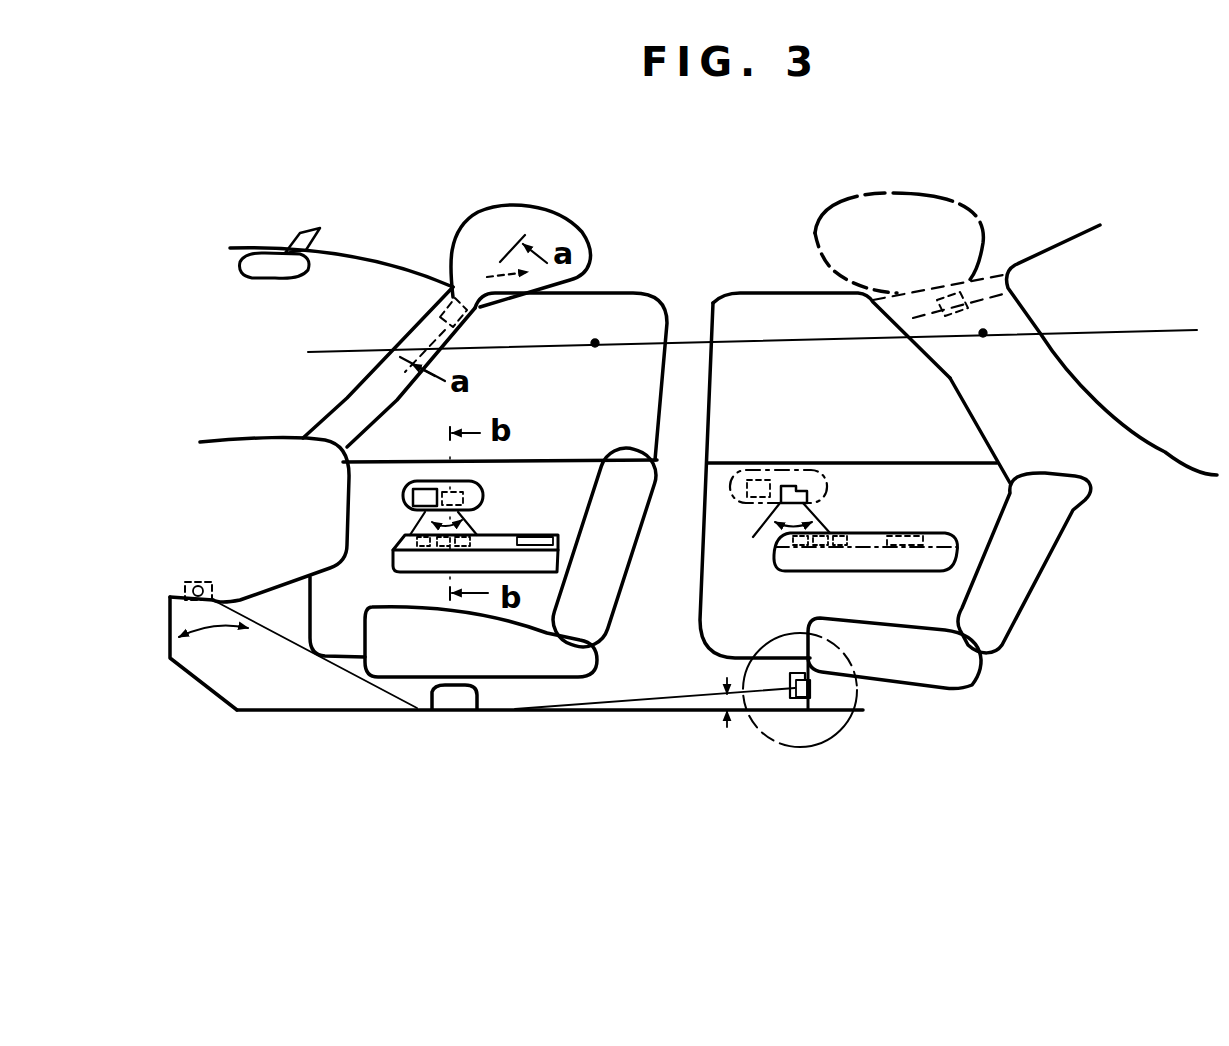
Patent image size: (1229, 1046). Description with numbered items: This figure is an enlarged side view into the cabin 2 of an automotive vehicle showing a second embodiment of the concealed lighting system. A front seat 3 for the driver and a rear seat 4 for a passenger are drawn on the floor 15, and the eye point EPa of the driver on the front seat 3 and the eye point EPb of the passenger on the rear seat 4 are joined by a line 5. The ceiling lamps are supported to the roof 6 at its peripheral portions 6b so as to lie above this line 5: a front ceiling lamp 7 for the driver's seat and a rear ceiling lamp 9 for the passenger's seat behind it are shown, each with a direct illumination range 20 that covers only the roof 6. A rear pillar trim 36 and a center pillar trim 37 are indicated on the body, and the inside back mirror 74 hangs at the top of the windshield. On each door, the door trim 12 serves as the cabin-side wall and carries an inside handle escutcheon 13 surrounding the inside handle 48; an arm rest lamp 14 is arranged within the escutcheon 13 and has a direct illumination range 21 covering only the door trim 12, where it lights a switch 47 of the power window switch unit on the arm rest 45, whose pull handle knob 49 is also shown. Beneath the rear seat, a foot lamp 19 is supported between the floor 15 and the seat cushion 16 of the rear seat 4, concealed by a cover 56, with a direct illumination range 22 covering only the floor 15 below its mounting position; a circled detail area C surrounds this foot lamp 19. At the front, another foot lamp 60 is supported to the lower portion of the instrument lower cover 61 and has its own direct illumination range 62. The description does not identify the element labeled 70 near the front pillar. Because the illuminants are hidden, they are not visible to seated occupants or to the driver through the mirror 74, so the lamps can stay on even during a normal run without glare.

The cabin 2 is at (718, 257).
The front seat 3 is at (659, 488).
The rear seat 4 is at (1065, 556).
The line 5 is at (1113, 330).
The roof 6 is at (760, 151).
The peripheral portion of the roof 6b is at (468, 276).
The front ceiling lamp 7 is at (437, 297).
The rear ceiling lamp 9 is at (1007, 290).
The door trim 12 is at (547, 472).
The inside handle escutcheon 13 is at (443, 487).
The arm rest lamp 14 is at (463, 492).
The floor 15 is at (661, 714).
The seat cushion 16 is at (977, 665).
The foot lamp 19 is at (815, 692).
The direct illumination range 20 is at (543, 222).
The direct illumination range 21 is at (413, 522).
The direct illumination range 22 is at (727, 727).
The rear pillar trim 36 is at (1067, 397).
The center pillar trim 37 is at (687, 405).
The arm rest 45 is at (410, 563).
The switch 47 is at (470, 533).
The inside handle 48 is at (413, 500).
The pull handle knob 49 is at (540, 523).
The cover 56 is at (790, 677).
The foot lamp 60 is at (198, 581).
The instrument lower cover 61 is at (269, 589).
The direct illumination range 62 is at (203, 658).
The front pillar 70 is at (417, 333).
The inside back mirror 74 is at (260, 263).
The detail circle C is at (819, 751).
The eye point of the driver EPa is at (595, 343).
The eye point of the passenger EPb is at (985, 336).